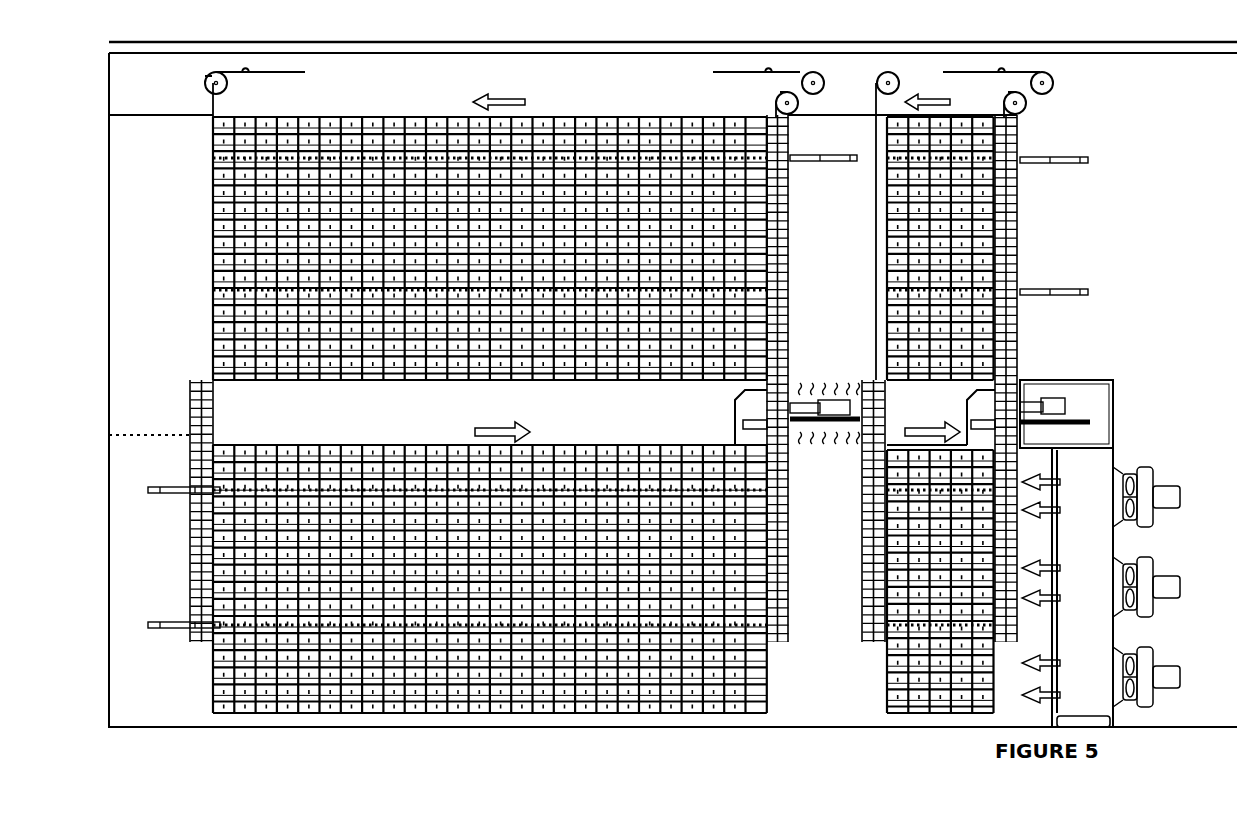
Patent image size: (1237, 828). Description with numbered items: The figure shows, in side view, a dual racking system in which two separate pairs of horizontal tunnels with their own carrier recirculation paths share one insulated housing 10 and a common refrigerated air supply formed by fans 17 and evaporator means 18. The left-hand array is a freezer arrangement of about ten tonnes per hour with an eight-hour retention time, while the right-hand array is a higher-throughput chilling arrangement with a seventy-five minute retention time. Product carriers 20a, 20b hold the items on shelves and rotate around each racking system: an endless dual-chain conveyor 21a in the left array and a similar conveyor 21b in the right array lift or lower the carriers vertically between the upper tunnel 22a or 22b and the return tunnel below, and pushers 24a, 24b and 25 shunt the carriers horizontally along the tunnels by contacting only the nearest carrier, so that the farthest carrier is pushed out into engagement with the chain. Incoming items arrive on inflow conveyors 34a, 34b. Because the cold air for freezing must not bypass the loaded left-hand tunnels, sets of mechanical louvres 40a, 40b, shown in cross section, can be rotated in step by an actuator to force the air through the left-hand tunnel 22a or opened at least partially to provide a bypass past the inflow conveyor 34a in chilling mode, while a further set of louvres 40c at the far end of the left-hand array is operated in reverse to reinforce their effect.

The housing 10 is at (735, 42).
The dual-chain conveyor 21a is at (204, 87).
The dual-chain conveyor 21b is at (1052, 96).
The left-hand tunnel 22a is at (657, 108).
The right-hand tunnel 22b is at (1025, 193).
The pusher 24a is at (855, 155).
The pusher 24b is at (1076, 159).
The carrier 20a is at (789, 258).
The carrier 20b is at (1016, 281).
The inflow conveyor 34a is at (808, 380).
The inflow conveyor 34b is at (1047, 397).
The air control louvres 40a is at (838, 382).
The air control louvres 40b is at (845, 452).
The air control louvres 40c is at (138, 434).
The pusher 25 is at (175, 494).
The evaporator means 18 is at (1106, 618).
The fans 17 is at (1155, 659).